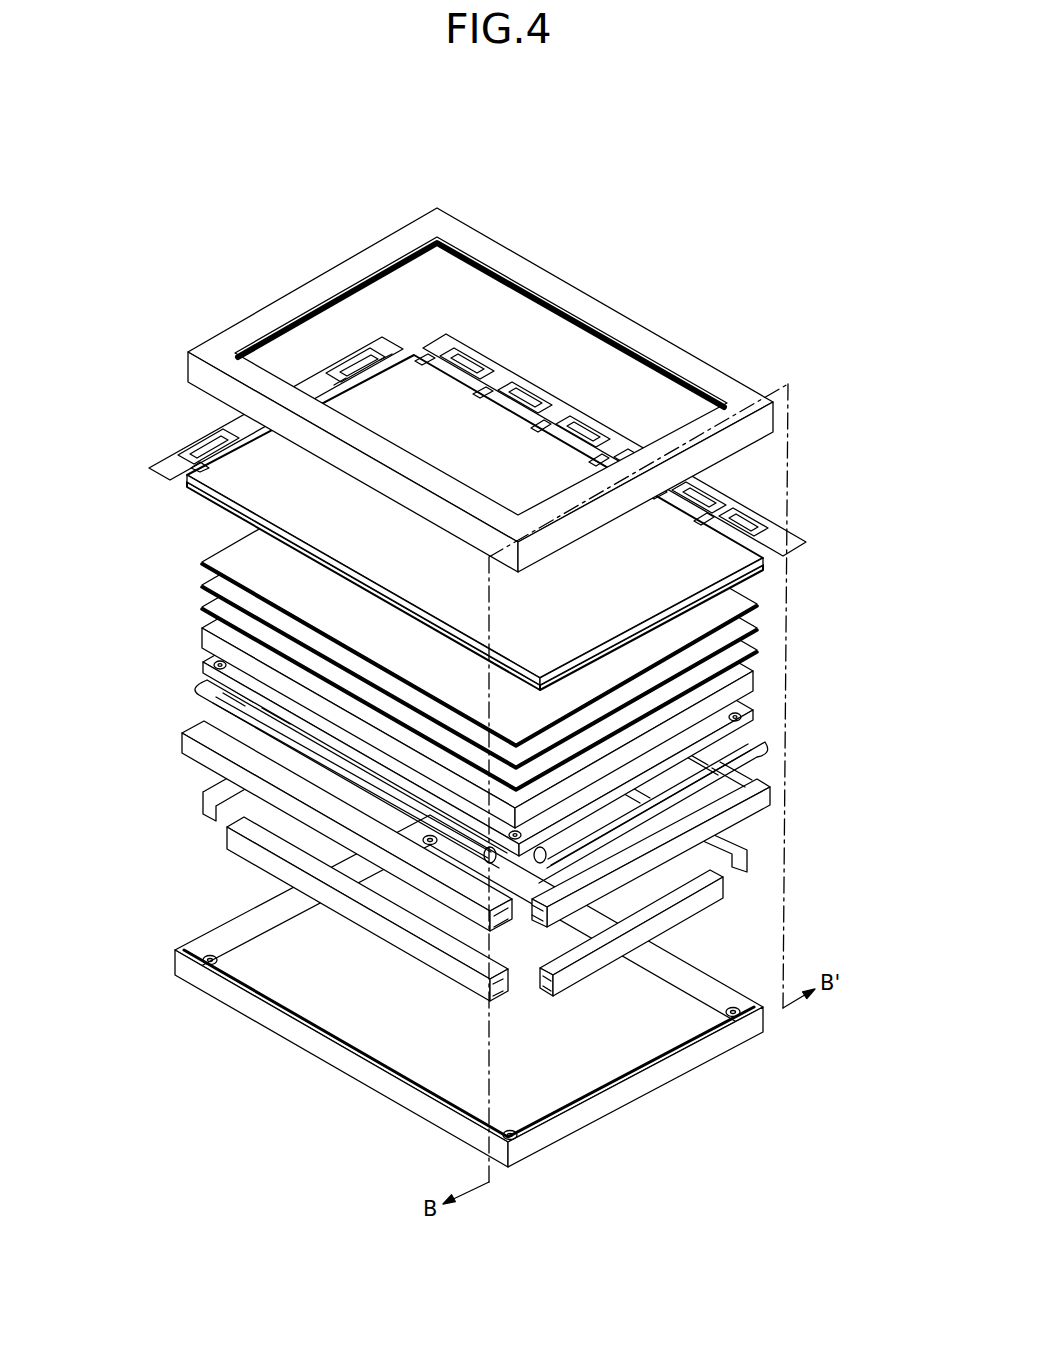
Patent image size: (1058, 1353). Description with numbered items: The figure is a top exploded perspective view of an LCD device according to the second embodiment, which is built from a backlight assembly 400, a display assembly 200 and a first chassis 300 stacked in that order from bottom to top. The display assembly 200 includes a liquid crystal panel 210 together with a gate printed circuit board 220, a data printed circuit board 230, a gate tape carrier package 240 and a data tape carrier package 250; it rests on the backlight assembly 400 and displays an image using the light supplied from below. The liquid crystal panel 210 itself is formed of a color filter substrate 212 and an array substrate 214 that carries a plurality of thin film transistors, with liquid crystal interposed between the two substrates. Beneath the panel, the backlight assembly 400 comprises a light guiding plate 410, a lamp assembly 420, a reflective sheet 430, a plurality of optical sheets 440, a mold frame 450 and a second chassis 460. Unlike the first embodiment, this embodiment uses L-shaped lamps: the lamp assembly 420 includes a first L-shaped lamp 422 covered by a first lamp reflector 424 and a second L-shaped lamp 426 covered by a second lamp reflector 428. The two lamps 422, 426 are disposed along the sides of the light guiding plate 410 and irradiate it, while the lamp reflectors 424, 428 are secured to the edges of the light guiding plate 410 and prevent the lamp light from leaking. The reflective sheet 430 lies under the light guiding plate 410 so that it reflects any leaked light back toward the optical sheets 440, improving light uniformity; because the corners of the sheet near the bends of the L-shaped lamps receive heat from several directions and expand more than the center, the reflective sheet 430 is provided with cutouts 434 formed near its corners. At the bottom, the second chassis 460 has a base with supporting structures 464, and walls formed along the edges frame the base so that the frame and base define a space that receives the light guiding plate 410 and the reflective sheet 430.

The display assembly 200 is at (495, 512).
The liquid crystal panel 210 is at (417, 522).
The color filter substrate 212 is at (218, 478).
The array substrate 214 is at (218, 498).
The gate printed circuit board 220 is at (170, 457).
The data printed circuit board 230 is at (802, 541).
The gate tape carrier package 240 is at (214, 442).
The data tape carrier package 250 is at (742, 518).
The first chassis 300 is at (668, 357).
The backlight assembly 400 is at (495, 804).
The light guiding plate 410 is at (756, 690).
The lamp assembly 420 is at (473, 800).
The first L-shaped lamp 422 is at (762, 753).
The first lamp reflector 424 is at (768, 797).
The second L-shaped lamp 426 is at (196, 684).
The second lamp reflector 428 is at (195, 728).
The reflective sheet 430 is at (474, 780).
The cutouts 434 is at (214, 664).
The optical sheets 440 is at (516, 606).
The mold frame 450 is at (200, 816).
The second chassis 460 is at (494, 987).
The supporting structures 464 is at (208, 958).